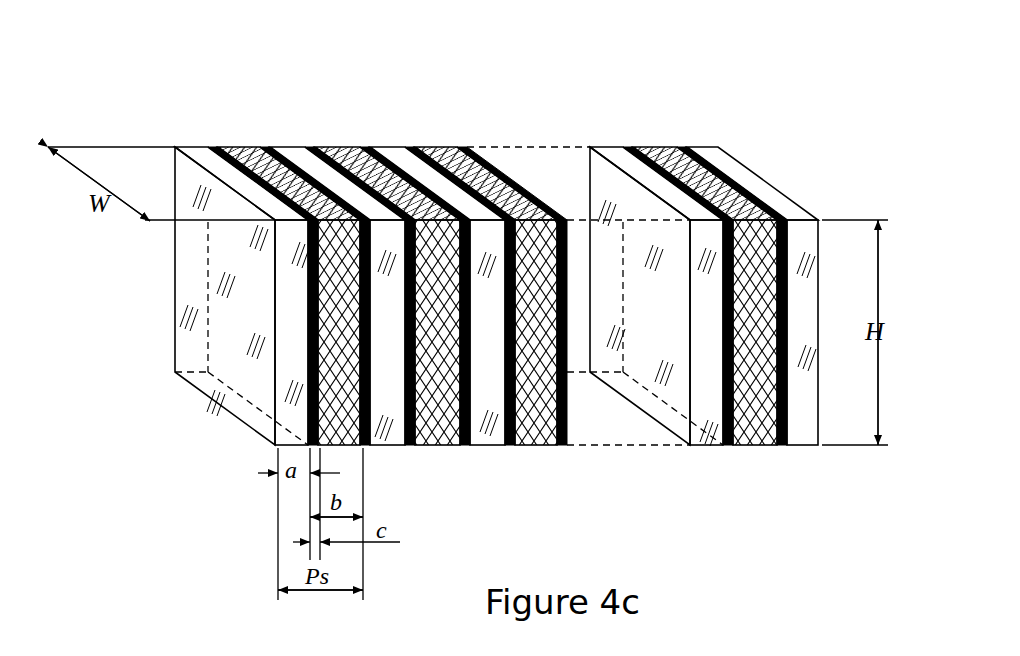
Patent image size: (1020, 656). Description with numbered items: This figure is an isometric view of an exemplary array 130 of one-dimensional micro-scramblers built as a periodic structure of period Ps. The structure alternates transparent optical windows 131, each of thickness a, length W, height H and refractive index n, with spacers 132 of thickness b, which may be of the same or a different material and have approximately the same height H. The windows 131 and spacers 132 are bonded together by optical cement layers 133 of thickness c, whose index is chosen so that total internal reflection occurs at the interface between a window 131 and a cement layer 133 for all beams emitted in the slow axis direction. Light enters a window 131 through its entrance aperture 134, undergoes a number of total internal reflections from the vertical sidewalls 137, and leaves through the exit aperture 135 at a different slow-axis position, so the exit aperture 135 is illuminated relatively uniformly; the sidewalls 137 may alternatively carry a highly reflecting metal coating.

The piezoelectric transducer stack 130 is at (505, 140).
The optical windows 131 is at (390, 158).
The spacers 132 is at (640, 145).
The optical cement layers 133 is at (697, 183).
The entrance aperture 134 is at (178, 300).
The exit aperture 135 is at (292, 362).
The sidewalls 137 is at (657, 392).